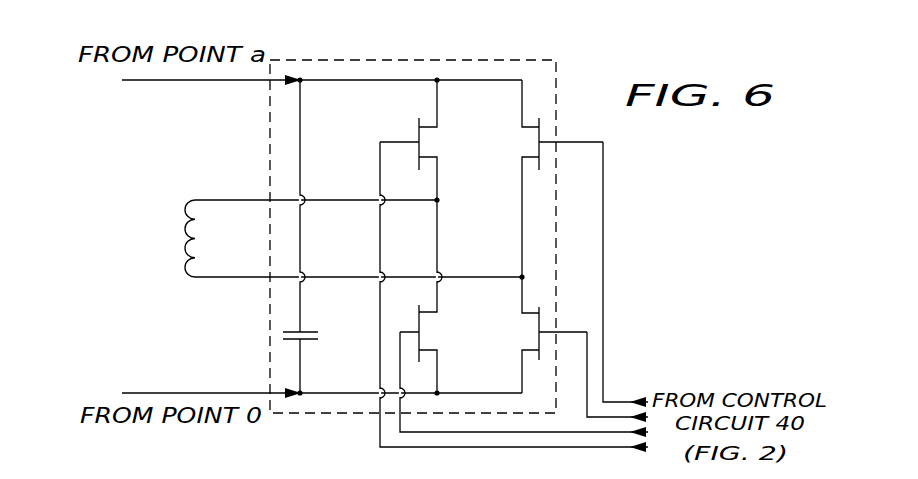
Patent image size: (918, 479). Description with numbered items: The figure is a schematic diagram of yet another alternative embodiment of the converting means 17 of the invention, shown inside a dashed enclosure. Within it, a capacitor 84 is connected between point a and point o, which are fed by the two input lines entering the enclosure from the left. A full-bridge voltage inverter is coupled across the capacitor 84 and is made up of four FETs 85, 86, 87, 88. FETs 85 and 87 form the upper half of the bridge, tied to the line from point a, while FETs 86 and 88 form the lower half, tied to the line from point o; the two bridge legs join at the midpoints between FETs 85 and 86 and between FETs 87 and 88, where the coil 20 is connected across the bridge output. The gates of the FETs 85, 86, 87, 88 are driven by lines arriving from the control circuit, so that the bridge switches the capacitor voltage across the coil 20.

The converting means 17 is at (505, 60).
The coil / inductor 20 is at (190, 272).
The capacitor 84 is at (312, 331).
The FET 85 is at (428, 125).
The FET 86 is at (425, 338).
The FET 87 is at (537, 138).
The FET 88 is at (538, 323).